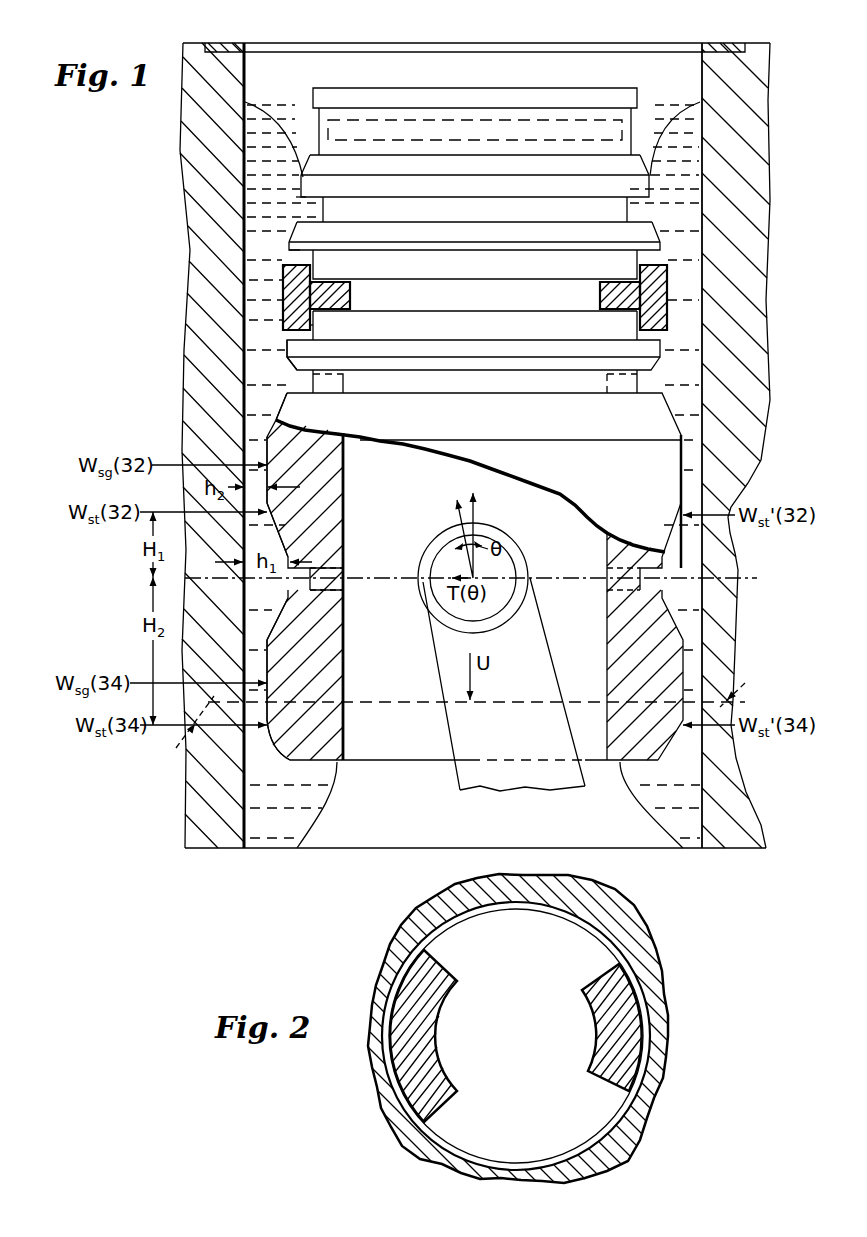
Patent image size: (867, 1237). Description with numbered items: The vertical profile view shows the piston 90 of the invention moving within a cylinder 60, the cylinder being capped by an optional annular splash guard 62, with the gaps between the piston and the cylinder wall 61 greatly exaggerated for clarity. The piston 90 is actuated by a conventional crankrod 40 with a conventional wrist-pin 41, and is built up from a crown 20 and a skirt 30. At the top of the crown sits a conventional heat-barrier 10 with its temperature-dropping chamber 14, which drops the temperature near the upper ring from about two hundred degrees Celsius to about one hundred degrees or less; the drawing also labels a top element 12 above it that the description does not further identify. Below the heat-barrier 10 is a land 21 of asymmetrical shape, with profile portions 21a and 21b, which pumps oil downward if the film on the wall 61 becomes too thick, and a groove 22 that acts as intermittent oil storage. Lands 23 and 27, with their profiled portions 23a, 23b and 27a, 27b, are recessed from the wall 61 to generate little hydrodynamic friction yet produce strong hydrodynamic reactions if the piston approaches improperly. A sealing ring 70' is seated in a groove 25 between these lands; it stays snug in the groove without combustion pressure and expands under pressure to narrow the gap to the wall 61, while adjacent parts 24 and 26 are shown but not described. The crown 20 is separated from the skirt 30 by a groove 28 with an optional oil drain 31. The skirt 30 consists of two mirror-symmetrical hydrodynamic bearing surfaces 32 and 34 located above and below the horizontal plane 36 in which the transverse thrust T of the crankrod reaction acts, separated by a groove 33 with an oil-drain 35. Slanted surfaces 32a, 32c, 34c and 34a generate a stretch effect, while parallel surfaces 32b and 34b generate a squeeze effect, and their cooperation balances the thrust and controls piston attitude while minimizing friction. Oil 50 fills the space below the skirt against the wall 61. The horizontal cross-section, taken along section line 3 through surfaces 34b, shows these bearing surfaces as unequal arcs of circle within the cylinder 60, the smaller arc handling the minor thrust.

In FIG. 1, the section line 3 is at (459, 718).
In FIG. 1, the heat-barrier 10 is at (480, 141).
In FIG. 1, the piston crown 12 is at (458, 88).
In FIG. 1, the temperature-dropping chamber 14 is at (530, 130).
In FIG. 1, the crown 20 is at (484, 270).
In FIG. 1, the land 21 is at (488, 175).
In FIG. 1, the upper outer edge of ring 21 21a is at (303, 165).
In FIG. 1, the lower outer edge of ring 21 21b is at (300, 183).
In FIG. 1, the groove 22 is at (637, 208).
In FIG. 1, the land 23 is at (488, 243).
In FIG. 1, the upper outer edge of ring 23 23a is at (292, 230).
In FIG. 1, the lower outer edge of ring 23 23b is at (288, 249).
In FIG. 1, the oil control ring 24 is at (312, 268).
In FIG. 1, the groove 25 is at (352, 296).
In FIG. 1, the ring groove lip 26 is at (314, 324).
In FIG. 1, the land 27 is at (457, 343).
In FIG. 1, the lower outer edge of ring 27 27a is at (292, 366).
In FIG. 1, the upper outer edge of ring 27 27b is at (287, 350).
In FIG. 1, the groove 28 is at (453, 395).
In FIG. 1, the skirt 30 is at (414, 474).
In FIG. 1, the oil drain 31 is at (312, 376).
In FIG. 1, the hydrodynamic bearing surface 32 is at (329, 494).
In FIG. 1, the slanted surface 32a is at (290, 403).
In FIG. 1, the parallel surface 32b is at (262, 453).
In FIG. 1, the slanted surface 32c is at (272, 541).
In FIG. 1, the groove 33 is at (338, 560).
In FIG. 1, the hydrodynamic bearing surface 34 is at (321, 693).
In FIG. 1, the slanted surface 34a is at (268, 757).
In FIG. 1, the parallel surface 34b is at (265, 663).
In FIG. 2, the parallel surface 34b is at (430, 1043).
In FIG. 1, the slanted surface 34c is at (280, 600).
In FIG. 1, the oil-drain 35 is at (343, 590).
In FIG. 1, the horizontal plane 36 is at (402, 577).
In FIG. 1, the crankrod 40 is at (531, 740).
In FIG. 1, the wrist-pin 41 is at (497, 628).
In FIG. 1, the oil 50 is at (287, 831).
In FIG. 1, the cylinder 60 is at (190, 208).
In FIG. 2, the cylinder 60 is at (396, 950).
In FIG. 1, the cylinder wall 61 is at (246, 83).
In FIG. 1, the annular splash guard 62 is at (396, 43).
In FIG. 1, the sealing ring 70' is at (238, 302).
In FIG. 1, the piston 90 is at (514, 431).